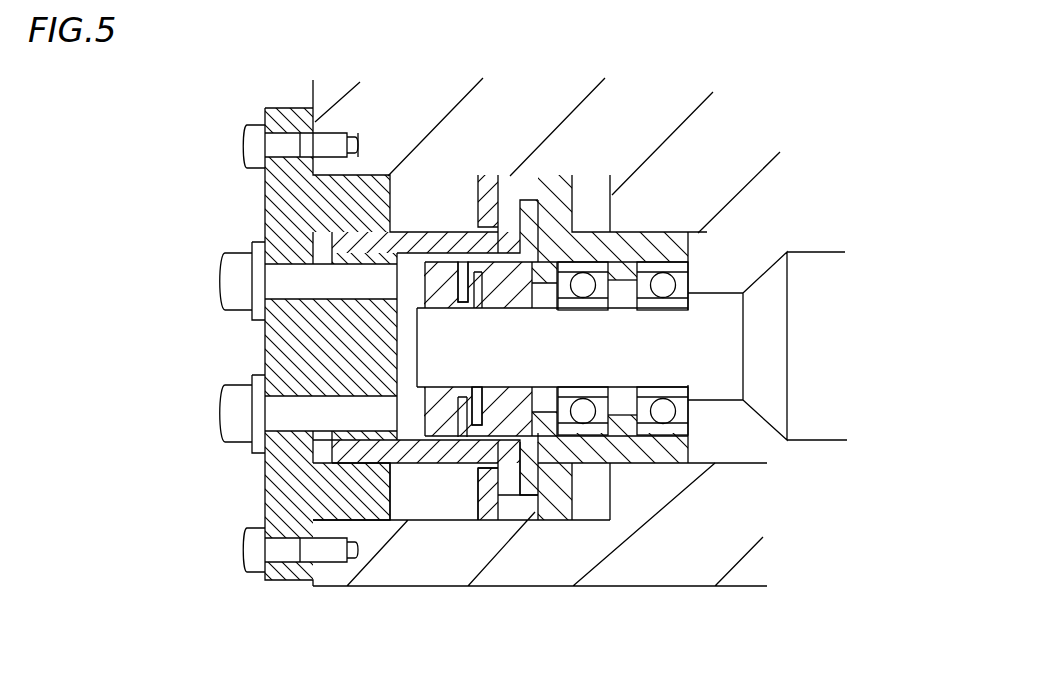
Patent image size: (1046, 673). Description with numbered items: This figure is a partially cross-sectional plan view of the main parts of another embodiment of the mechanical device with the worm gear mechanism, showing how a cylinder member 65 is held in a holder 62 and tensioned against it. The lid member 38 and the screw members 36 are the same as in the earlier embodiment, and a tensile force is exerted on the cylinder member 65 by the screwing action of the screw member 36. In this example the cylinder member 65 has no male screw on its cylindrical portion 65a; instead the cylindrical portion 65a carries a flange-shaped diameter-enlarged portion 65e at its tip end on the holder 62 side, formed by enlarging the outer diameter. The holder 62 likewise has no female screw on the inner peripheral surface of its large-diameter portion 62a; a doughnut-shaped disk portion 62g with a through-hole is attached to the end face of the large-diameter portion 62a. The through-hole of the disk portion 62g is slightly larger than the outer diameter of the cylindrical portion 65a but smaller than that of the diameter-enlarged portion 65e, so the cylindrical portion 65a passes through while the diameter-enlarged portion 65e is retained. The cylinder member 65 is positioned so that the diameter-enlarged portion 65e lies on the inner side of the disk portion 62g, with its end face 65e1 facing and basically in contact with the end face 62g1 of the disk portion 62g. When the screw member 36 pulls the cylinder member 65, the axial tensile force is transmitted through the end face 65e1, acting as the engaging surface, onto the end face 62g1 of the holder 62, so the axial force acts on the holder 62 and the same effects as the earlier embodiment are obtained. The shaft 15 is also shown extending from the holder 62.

The shaft 15 is at (731, 467).
The screw member 36 is at (236, 282).
The lid member 38 is at (268, 582).
The holder 62 is at (584, 474).
The large-diameter portion 62a is at (545, 510).
The disk portion 62g is at (478, 498).
The end face 62g1 is at (527, 497).
The cylinder member 65 is at (320, 343).
The cylindrical portion 65a is at (450, 240).
The diameter-enlarged portion 65e is at (538, 197).
The end face 65e1 is at (512, 220).